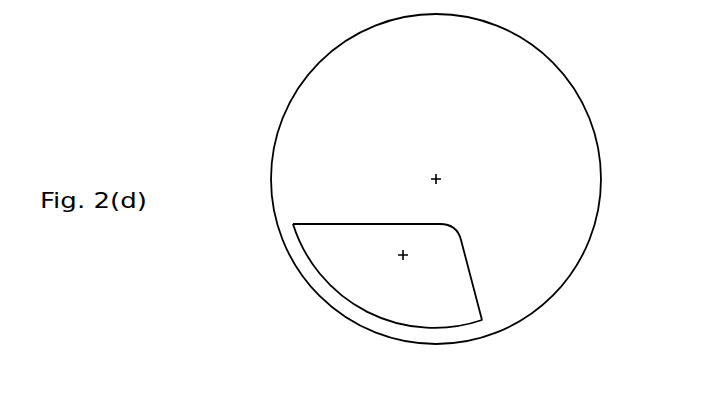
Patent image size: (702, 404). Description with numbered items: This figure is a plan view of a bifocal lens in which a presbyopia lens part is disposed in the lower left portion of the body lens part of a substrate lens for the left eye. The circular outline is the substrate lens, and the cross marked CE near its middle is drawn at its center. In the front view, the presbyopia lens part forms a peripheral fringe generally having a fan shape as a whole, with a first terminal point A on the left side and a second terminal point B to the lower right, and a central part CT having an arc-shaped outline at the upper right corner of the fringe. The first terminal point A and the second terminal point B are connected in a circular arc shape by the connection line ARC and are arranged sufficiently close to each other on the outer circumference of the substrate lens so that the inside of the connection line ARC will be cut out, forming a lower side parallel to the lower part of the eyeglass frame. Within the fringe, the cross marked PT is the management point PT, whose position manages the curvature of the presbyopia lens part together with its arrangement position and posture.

The center of circle CE is at (436, 169).
The management point PT is at (403, 265).
The central part CT is at (387, 266).
The connection line ARC is at (358, 307).
The first terminal point A is at (288, 215).
The second terminal point B is at (491, 320).